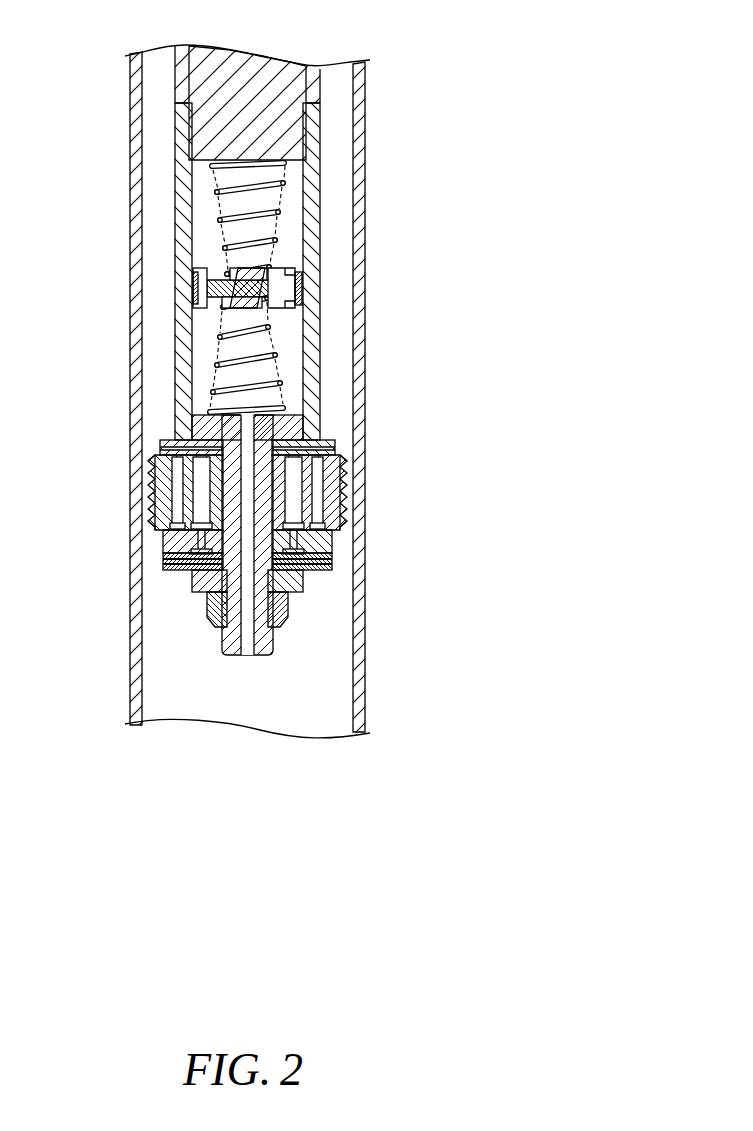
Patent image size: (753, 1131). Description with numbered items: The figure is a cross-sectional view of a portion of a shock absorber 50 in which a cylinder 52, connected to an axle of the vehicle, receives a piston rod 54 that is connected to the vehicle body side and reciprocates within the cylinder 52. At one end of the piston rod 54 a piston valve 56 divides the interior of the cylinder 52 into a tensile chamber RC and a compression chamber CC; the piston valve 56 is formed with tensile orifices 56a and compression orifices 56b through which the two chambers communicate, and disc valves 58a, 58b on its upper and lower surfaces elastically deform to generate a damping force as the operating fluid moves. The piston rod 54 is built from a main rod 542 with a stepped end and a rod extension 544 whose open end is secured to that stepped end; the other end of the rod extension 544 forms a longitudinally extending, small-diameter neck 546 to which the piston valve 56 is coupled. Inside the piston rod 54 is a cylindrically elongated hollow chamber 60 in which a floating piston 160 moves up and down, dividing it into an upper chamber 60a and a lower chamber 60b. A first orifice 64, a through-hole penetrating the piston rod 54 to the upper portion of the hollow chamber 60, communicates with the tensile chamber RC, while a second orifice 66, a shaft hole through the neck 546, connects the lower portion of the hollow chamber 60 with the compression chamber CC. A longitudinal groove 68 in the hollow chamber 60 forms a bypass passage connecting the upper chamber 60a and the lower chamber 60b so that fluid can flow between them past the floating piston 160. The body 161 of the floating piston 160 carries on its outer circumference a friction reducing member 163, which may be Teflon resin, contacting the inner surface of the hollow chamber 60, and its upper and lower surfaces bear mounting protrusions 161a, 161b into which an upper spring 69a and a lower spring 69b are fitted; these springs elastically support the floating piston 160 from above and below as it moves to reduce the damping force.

The shock absorber 50 is at (392, 85).
The cylinder 52 is at (357, 126).
The piston rod 54 is at (233, 334).
The main rod 542 is at (183, 81).
The rod extension 544 is at (183, 193).
The neck 546 is at (190, 573).
The piston valve 56 is at (283, 504).
The tensile orifices 56a is at (312, 502).
The compression orifices 56b is at (325, 487).
The disc valve 58a is at (323, 568).
The disc valve 58b is at (333, 445).
The hollow chamber 60 is at (227, 287).
The upper chamber 60a is at (239, 219).
The lower chamber 60b is at (240, 354).
The first orifice 64 is at (308, 163).
The second orifice 66 is at (290, 646).
The groove 68 is at (258, 300).
The upper spring 69a is at (292, 214).
The lower spring 69b is at (290, 384).
The floating piston 160 is at (296, 270).
The body 161 is at (300, 285).
The mounting protrusion 161a is at (270, 262).
The mounting protrusion 161b is at (265, 306).
The friction reducing member 163 is at (292, 303).
The tensile chamber RC is at (157, 158).
The compression chamber CC is at (168, 673).